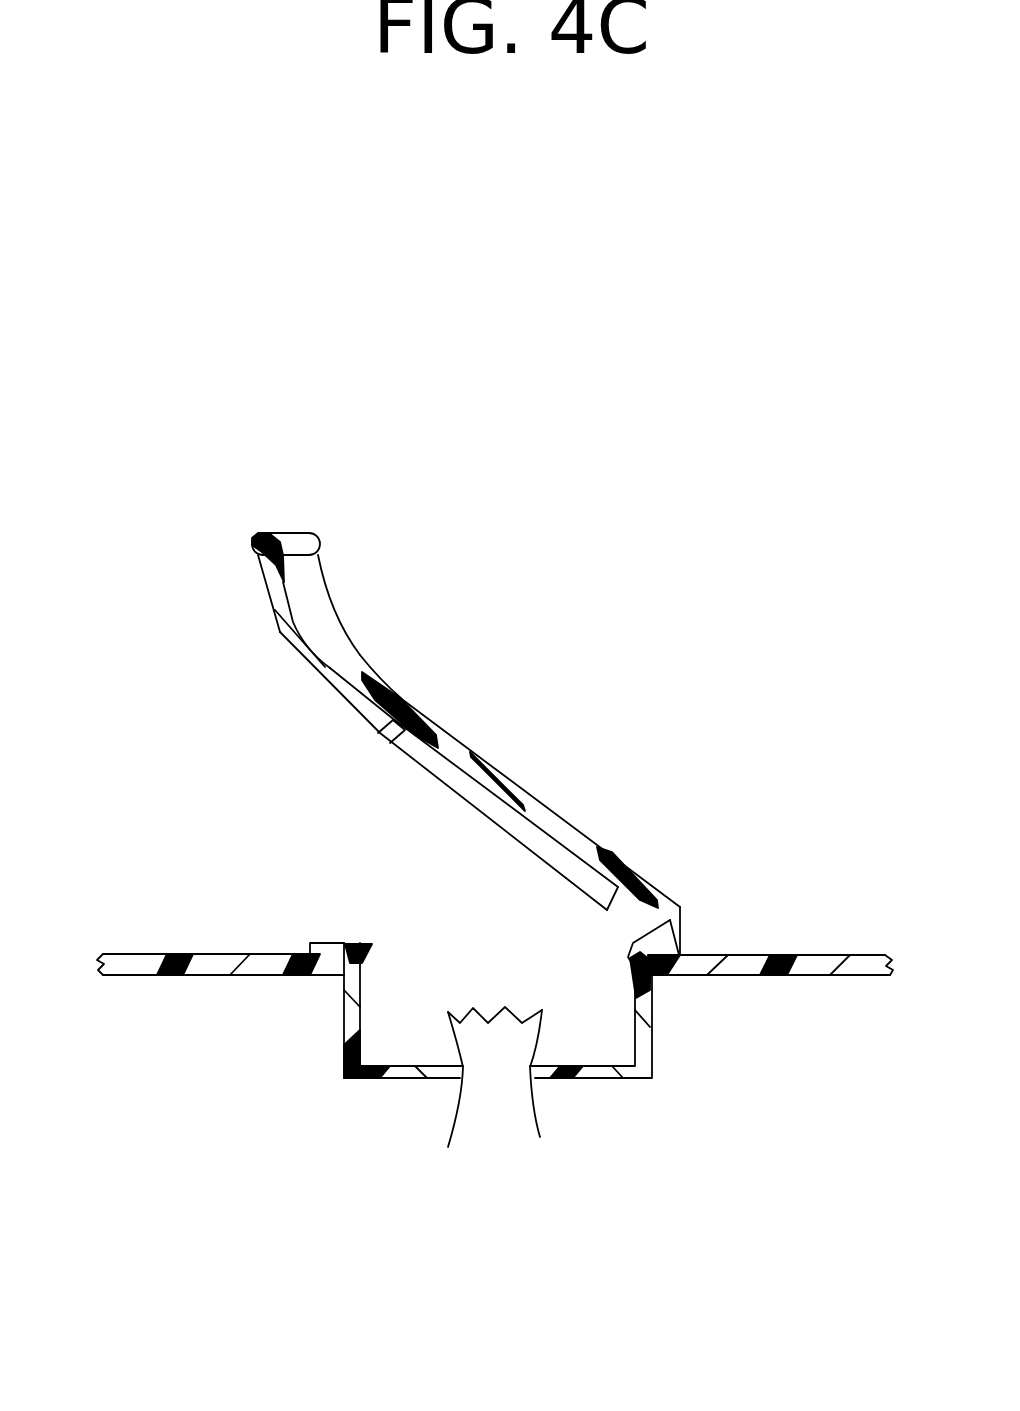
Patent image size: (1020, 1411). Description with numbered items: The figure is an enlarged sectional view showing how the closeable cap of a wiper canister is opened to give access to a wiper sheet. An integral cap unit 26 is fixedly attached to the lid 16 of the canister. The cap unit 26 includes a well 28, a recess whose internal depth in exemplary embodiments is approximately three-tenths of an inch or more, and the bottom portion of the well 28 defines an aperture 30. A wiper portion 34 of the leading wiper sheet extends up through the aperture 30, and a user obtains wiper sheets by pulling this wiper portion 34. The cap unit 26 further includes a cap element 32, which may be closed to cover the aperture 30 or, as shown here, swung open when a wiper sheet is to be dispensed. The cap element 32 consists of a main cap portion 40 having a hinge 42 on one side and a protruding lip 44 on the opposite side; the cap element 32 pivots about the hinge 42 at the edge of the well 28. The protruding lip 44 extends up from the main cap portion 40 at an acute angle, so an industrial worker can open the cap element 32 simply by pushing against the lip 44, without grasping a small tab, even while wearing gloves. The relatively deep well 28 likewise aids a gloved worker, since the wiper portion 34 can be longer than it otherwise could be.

The cap unit 26 is at (142, 620).
The lid 16 is at (158, 953).
The well 28 is at (653, 1015).
The aperture 30 is at (520, 1065).
The cap element 32 is at (540, 785).
The wiper portion 34 is at (457, 1025).
The main cap portion 40 is at (450, 730).
The hinge 42 is at (680, 928).
The protruding lip 44 is at (328, 625).